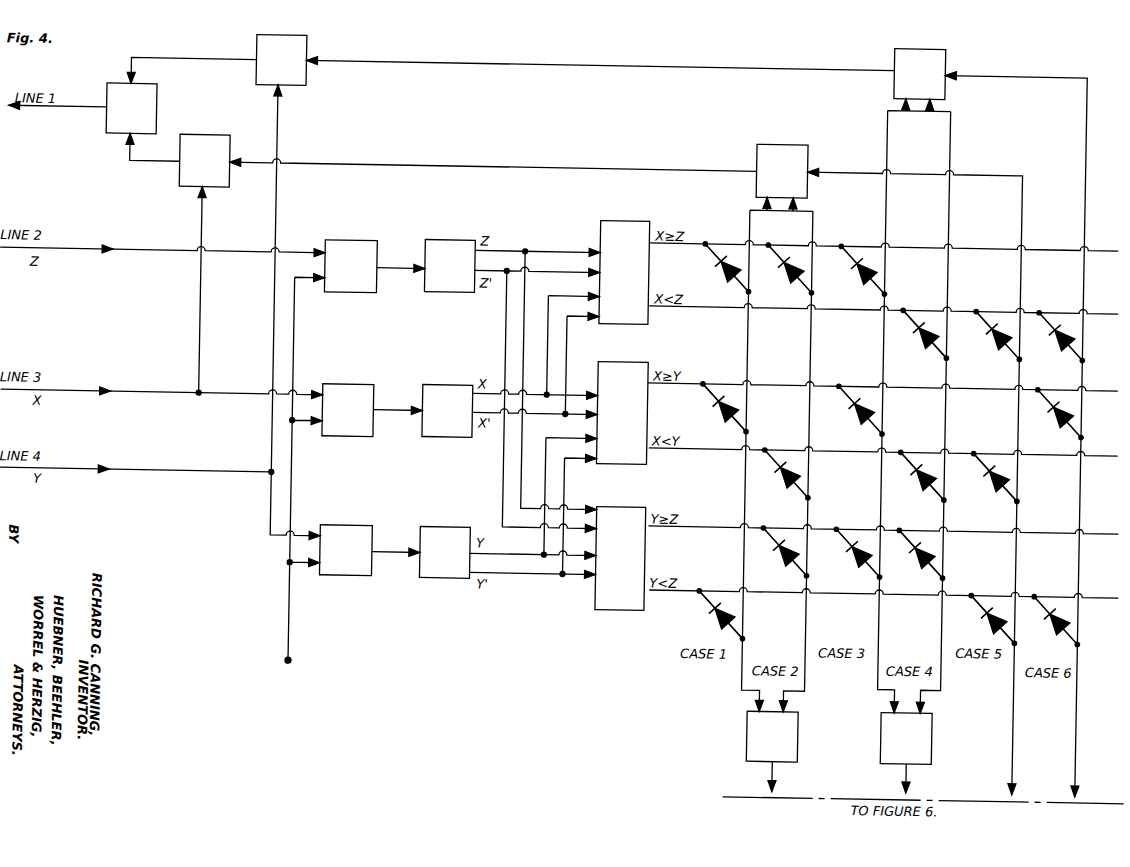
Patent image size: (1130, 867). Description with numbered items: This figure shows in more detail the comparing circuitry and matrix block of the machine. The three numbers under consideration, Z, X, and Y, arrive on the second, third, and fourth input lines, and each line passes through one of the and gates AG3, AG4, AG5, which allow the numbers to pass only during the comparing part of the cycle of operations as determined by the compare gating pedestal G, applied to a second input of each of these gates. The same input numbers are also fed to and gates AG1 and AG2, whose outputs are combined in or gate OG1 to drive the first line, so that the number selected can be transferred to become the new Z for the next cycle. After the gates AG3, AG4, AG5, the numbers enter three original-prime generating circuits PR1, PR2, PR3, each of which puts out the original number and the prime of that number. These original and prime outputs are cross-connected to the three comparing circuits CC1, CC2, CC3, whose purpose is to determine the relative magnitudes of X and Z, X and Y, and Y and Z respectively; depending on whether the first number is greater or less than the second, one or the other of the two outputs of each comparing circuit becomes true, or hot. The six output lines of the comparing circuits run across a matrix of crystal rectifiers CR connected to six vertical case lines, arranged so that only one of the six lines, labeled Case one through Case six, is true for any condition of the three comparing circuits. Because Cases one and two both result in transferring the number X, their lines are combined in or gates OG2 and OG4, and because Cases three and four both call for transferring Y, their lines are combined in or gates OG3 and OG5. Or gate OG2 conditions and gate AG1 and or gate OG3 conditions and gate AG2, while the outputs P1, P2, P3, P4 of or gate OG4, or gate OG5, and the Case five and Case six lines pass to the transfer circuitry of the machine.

The or gate OG1 is at (131, 108).
The or gate OG2 is at (782, 171).
The or gate OG3 is at (920, 74).
The or gate OG4 is at (772, 736).
The or gate OG5 is at (906, 739).
The and gate AG1 is at (204, 160).
The and gate AG2 is at (281, 60).
The and gate AG3 is at (350, 266).
The and gate AG4 is at (348, 410).
The and gate AG5 is at (345, 550).
The original-prime generating circuit PR1 is at (449, 266).
The original-prime generating circuit PR2 is at (447, 411).
The original-prime generating circuit PR3 is at (444, 552).
The comparing circuit CC1 is at (624, 273).
The comparing circuit CC2 is at (622, 413).
The comparing circuit CC3 is at (620, 559).
The crystal rectifier CR is at (885, 443).
The compare gating pedestal G is at (316, 487).
The output line P1 is at (761, 776).
The output line P2 is at (895, 779).
The output line P3 is at (1000, 787).
The output line P4 is at (1064, 790).